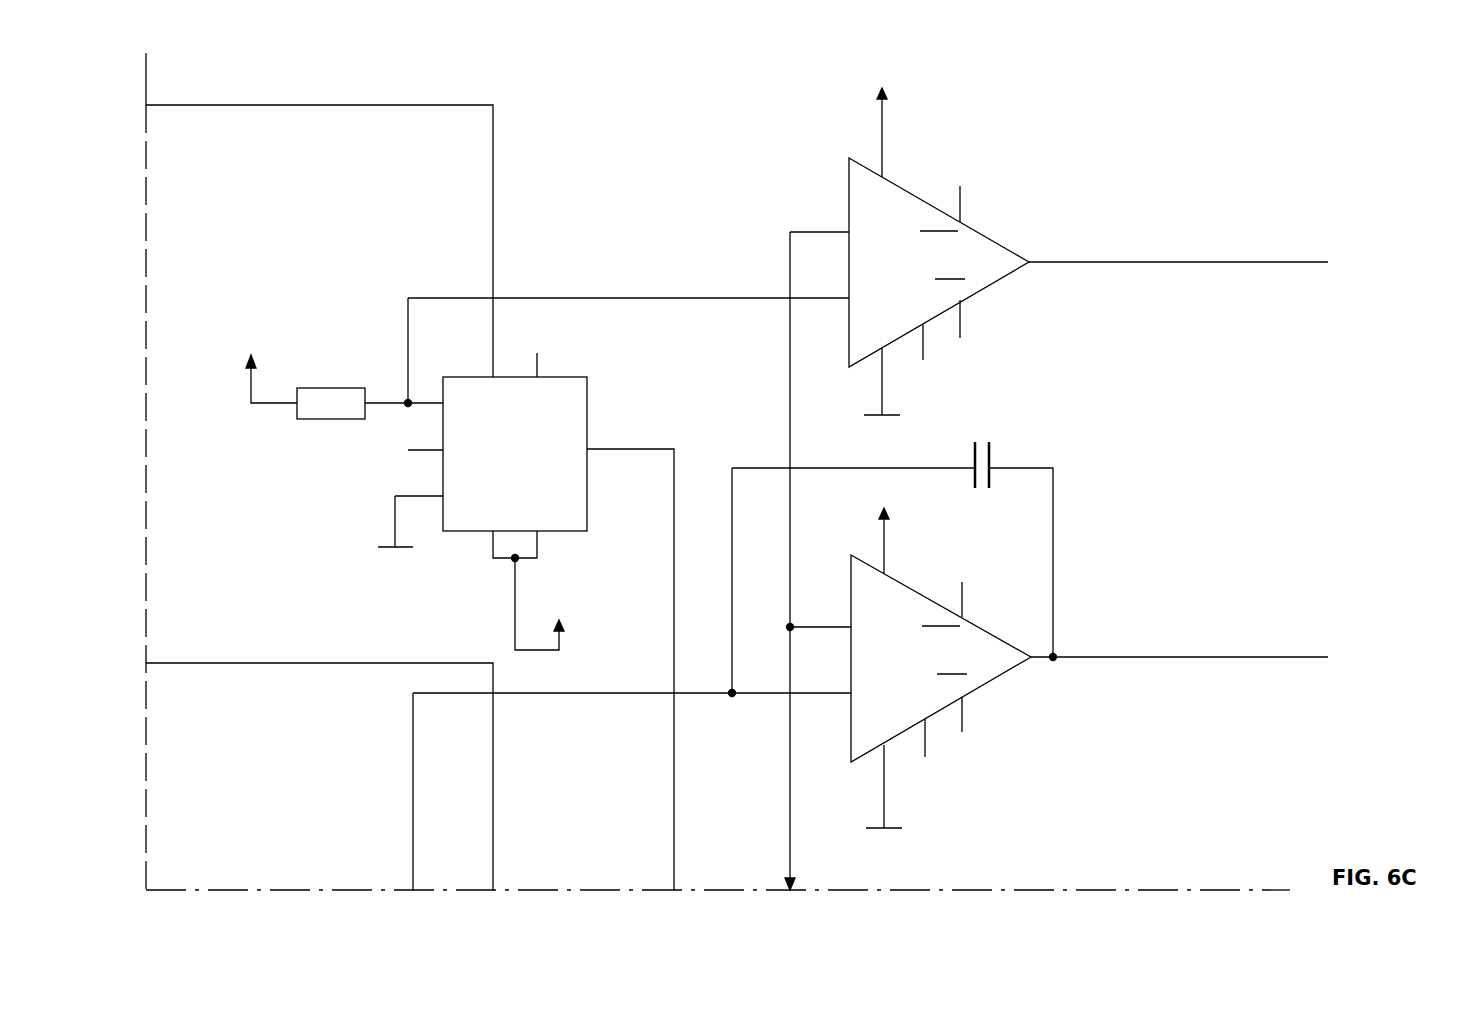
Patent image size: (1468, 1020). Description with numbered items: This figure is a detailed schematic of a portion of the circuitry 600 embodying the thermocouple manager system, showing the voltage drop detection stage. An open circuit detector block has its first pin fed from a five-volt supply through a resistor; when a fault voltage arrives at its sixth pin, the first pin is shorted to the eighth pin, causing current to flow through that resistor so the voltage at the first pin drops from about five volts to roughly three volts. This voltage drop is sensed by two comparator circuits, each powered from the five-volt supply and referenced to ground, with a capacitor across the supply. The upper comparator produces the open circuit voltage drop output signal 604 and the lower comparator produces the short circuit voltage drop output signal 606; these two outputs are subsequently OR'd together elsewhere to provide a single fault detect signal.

The open and short circuit voltage drop detection circuit 600 is at (1255, 77).
The open circuit voltage drop output signal 604 is at (1175, 253).
The short circuit voltage drop output signal 606 is at (1146, 649).